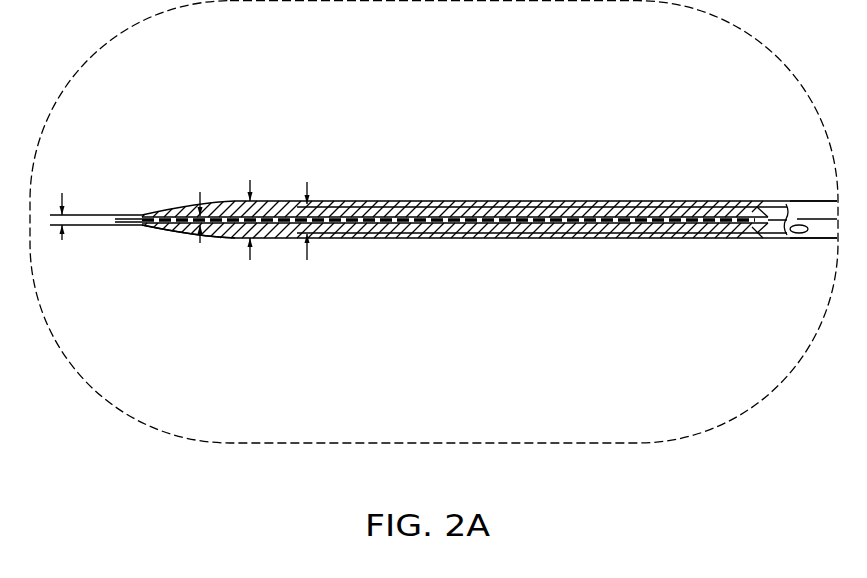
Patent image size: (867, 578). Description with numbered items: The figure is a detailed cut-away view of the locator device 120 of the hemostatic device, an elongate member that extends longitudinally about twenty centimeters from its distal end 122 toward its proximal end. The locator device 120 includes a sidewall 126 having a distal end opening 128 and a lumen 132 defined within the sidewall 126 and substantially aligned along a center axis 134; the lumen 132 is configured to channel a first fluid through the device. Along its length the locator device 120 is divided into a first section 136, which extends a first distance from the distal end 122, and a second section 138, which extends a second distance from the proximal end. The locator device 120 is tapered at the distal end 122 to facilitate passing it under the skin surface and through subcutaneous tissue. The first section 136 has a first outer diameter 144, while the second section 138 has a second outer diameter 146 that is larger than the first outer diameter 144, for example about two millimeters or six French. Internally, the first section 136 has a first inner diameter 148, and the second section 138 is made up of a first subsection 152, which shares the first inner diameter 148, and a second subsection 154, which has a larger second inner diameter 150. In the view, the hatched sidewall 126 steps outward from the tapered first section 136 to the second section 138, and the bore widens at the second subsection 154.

The locator device 120 is at (372, 274).
The distal end 122 is at (134, 237).
The sidewall 126 is at (448, 201).
The distal end opening 128 is at (140, 215).
The lumen 132 is at (777, 213).
The center axis 134 is at (654, 214).
The first section 136 is at (180, 249).
The second section 138 is at (809, 180).
The first outer diameter 144 is at (62, 240).
The second outer diameter 146 is at (250, 180).
The first inner diameter 148 is at (202, 192).
The second inner diameter 150 is at (307, 182).
The first subsection 152 is at (534, 193).
The second subsection 154 is at (790, 252).